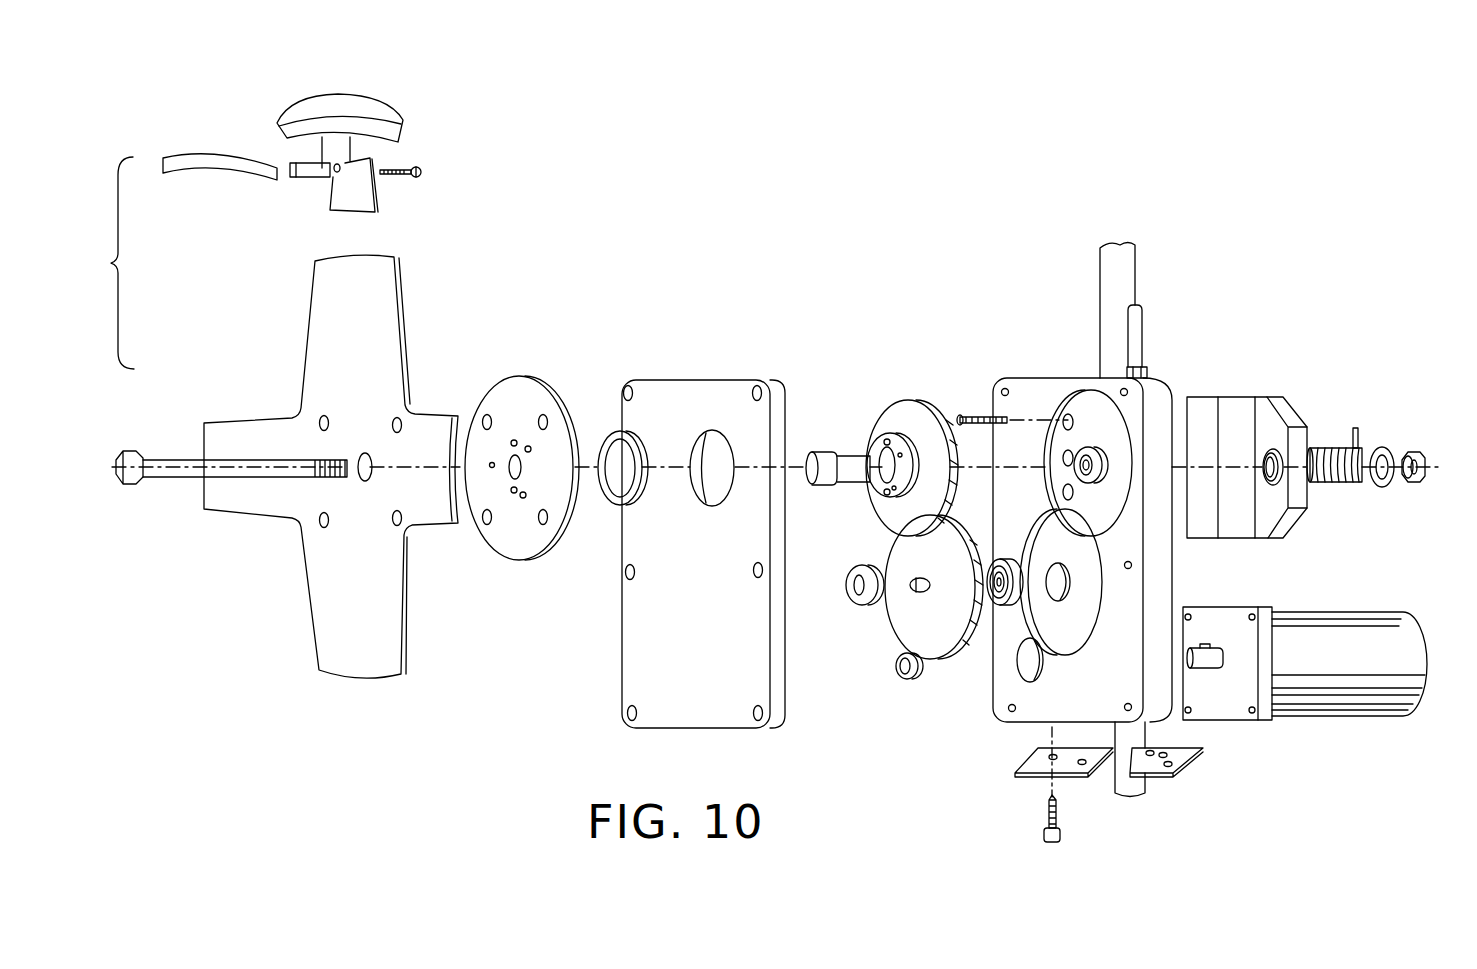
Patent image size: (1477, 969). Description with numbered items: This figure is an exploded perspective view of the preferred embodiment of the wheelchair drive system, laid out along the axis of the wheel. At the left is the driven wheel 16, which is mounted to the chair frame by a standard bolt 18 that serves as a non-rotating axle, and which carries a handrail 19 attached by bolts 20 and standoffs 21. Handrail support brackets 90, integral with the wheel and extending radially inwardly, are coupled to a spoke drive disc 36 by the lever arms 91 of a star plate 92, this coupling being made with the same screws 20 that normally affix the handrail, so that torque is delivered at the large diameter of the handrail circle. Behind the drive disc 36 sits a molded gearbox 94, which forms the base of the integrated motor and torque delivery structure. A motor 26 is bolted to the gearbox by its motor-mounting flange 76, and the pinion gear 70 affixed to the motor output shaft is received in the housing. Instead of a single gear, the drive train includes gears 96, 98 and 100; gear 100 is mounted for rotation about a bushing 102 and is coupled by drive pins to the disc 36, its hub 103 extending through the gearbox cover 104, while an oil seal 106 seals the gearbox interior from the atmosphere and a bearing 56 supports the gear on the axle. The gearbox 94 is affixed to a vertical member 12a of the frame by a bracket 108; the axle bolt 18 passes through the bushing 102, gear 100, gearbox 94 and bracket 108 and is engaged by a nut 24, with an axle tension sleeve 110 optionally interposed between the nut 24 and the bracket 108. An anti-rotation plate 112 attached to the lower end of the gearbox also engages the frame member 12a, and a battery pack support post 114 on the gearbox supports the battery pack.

The vertical member 12a is at (1102, 258).
The driven wheel 16 is at (370, 93).
The axle bolt 18 is at (178, 460).
The handrail 19 is at (190, 153).
The bolt 20 is at (393, 177).
The standoff 21 is at (308, 178).
The nut 24 is at (1418, 452).
The motor 26 is at (1316, 643).
The drive disc 36 is at (520, 390).
The bearing 56 is at (998, 620).
The pinion gear 70 is at (907, 678).
The motor-mounting flange 76 is at (1220, 603).
The handrail support bracket 90 is at (343, 147).
The lever arm 91 is at (403, 305).
The star plate 92 is at (336, 466).
The gearbox 94 is at (1165, 385).
The gear 96 is at (903, 625).
The gear 98 is at (852, 602).
The gear 100 is at (921, 440).
The bushing 102 is at (840, 453).
The hub 103 is at (873, 440).
The gearbox cover 104 is at (622, 653).
The oil seal 106 is at (637, 435).
The bracket 108 is at (1270, 393).
The axle tension sleeve 110 is at (1345, 487).
The anti-rotation plate 112 is at (1167, 777).
The battery pack support post 114 is at (1140, 308).